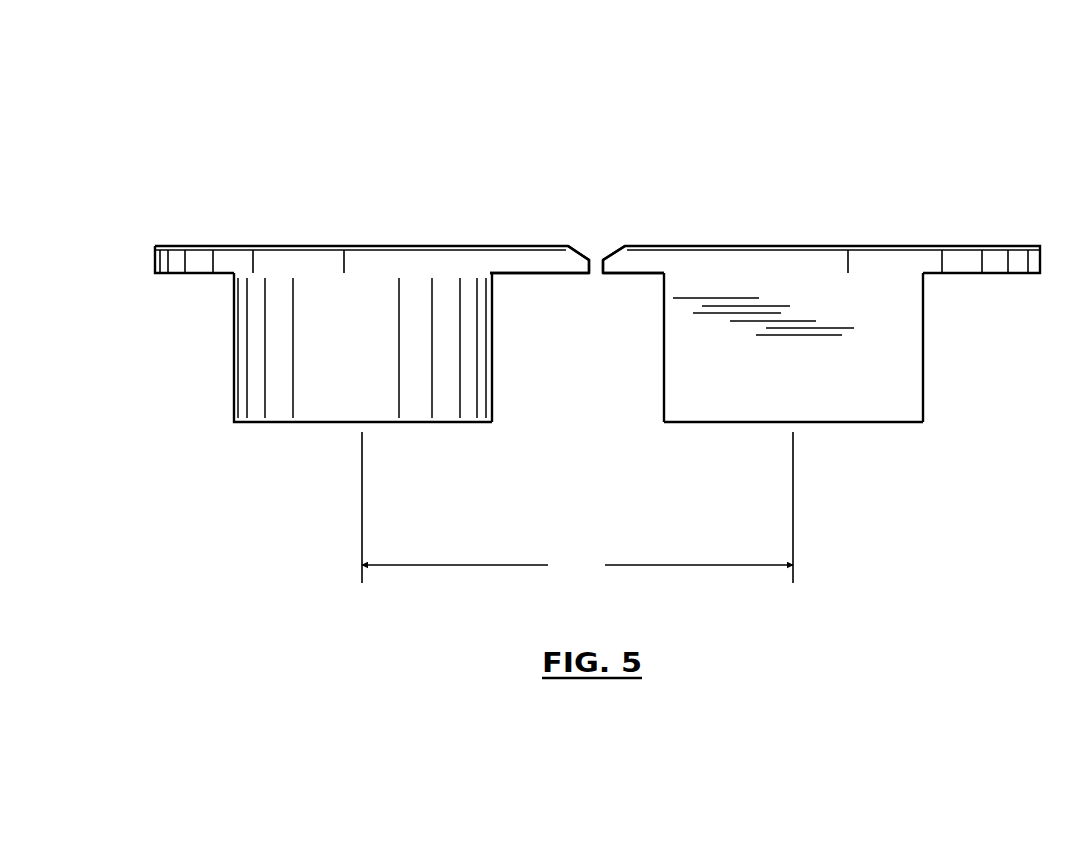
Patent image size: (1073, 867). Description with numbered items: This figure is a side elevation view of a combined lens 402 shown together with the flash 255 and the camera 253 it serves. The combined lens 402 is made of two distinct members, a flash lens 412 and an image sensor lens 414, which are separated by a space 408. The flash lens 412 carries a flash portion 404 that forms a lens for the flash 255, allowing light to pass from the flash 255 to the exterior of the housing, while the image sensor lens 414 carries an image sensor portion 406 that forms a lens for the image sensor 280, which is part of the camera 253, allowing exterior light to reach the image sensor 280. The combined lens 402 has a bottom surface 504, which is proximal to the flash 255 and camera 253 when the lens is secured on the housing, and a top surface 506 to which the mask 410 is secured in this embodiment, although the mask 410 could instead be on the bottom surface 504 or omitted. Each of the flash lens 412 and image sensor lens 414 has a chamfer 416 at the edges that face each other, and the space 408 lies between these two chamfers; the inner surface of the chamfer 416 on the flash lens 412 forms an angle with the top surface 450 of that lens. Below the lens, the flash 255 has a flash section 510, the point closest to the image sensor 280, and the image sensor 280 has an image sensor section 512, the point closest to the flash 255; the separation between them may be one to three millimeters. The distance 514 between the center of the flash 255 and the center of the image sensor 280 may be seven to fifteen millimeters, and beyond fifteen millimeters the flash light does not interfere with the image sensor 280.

The combined lens 402 is at (197, 130).
The flash portion 404 is at (347, 245).
The image sensor portion 406 is at (880, 267).
The space 408 is at (597, 277).
The mask 410 is at (815, 245).
The flash lens 412 is at (195, 265).
The image sensor lens 414 is at (995, 262).
The chamfer 416 is at (579, 248).
The top surface of the flash lens 450 is at (748, 245).
The bottom surface 504 is at (537, 277).
The top surface 506 is at (418, 245).
The flash section 510 is at (493, 385).
The image sensor section 512 is at (664, 393).
The distance 514 is at (577, 507).
The flash 255 is at (277, 410).
The camera 253 is at (823, 390).
The image sensor 280 is at (875, 370).